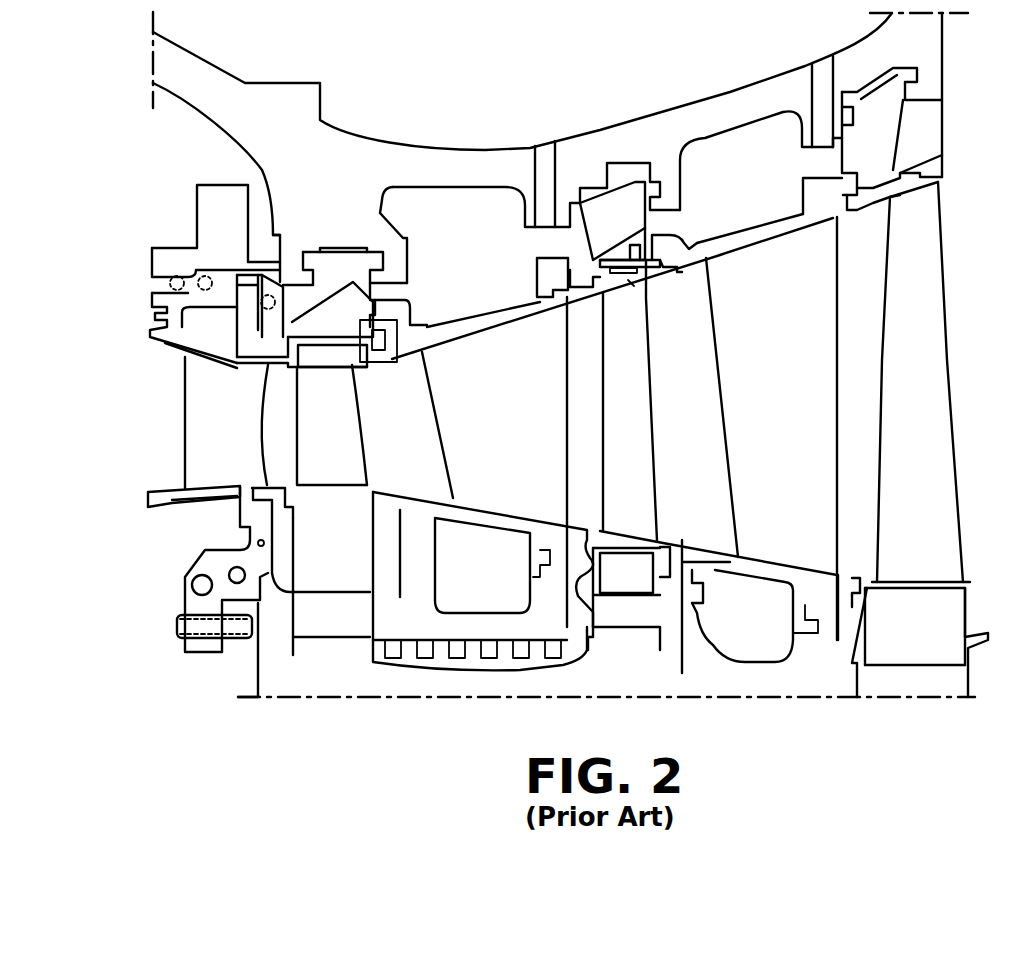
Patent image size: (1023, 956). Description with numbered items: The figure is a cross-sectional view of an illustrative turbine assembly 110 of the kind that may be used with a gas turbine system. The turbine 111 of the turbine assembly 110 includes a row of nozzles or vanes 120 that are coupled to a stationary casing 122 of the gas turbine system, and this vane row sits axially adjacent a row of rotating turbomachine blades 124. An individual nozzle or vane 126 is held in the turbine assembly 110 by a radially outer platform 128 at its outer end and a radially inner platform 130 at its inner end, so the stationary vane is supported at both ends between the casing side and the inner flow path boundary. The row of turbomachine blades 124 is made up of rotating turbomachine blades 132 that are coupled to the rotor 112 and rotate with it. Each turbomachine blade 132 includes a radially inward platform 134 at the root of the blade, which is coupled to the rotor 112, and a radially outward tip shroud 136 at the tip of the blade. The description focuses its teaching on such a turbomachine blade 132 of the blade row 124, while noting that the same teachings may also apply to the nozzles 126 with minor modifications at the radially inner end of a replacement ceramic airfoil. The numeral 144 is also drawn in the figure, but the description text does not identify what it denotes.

The turbine assembly 110 is at (460, 126).
The turbine 111 is at (698, 252).
The rotor 112 is at (635, 655).
The row of nozzles or vanes 120 is at (500, 296).
The stationary casing 122 is at (330, 207).
The row of rotating turbomachine blades 124 is at (622, 292).
The nozzle or vane 126 is at (477, 413).
The radially outer platform 128 is at (488, 335).
The radially inner platform 130 is at (543, 520).
The rotating turbomachine blade 132 is at (623, 378).
The radially inward platform 134 is at (623, 523).
The radially outward tip shroud 136 is at (630, 280).
The seal plate 144 is at (620, 628).